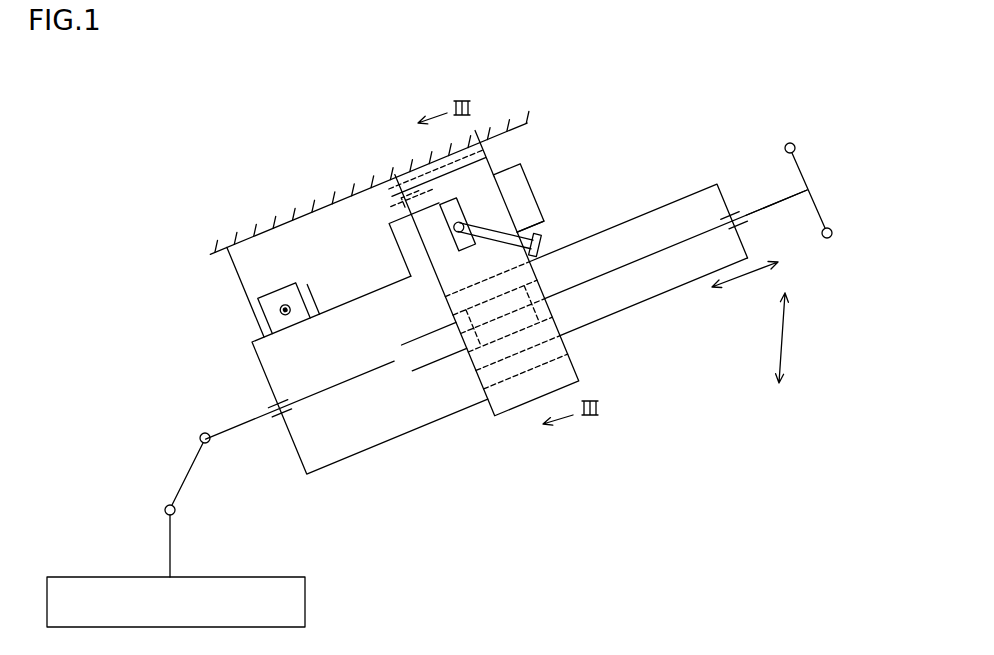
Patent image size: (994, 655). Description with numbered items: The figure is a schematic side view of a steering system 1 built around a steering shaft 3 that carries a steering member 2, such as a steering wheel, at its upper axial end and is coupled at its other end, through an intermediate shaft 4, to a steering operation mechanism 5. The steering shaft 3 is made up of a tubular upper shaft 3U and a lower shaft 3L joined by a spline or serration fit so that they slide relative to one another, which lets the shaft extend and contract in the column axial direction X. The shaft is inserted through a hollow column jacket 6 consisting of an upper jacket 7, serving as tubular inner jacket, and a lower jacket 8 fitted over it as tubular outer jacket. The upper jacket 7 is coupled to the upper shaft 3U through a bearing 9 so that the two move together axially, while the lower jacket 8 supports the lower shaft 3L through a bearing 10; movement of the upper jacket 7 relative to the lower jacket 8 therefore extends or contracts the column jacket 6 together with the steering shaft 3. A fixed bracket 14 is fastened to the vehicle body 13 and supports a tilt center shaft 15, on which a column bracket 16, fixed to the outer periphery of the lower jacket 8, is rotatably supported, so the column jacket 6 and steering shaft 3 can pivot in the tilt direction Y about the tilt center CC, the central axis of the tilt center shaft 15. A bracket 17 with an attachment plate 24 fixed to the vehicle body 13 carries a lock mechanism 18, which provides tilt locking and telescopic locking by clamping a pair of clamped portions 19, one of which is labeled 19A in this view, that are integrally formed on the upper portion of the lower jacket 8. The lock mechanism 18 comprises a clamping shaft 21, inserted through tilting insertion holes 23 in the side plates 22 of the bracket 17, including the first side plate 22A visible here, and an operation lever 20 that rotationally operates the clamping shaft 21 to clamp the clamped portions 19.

The steering system 1 is at (724, 123).
The steering member 2 is at (800, 165).
The steering shaft 3 is at (761, 196).
The upper shaft 3U is at (687, 240).
The lower shaft 3L is at (367, 372).
The intermediate shaft 4 is at (185, 473).
The steering operation mechanism 5 is at (305, 600).
The column jacket 6 is at (687, 295).
The upper jacket 7 is at (635, 307).
The lower jacket 8 is at (369, 448).
The bearing 9 is at (737, 213).
The bearing 10 is at (264, 405).
The vehicle body 13 is at (322, 207).
The fixed bracket 14 is at (282, 258).
The tilt center shaft 15 is at (258, 298).
The column bracket 16 is at (311, 304).
The bracket 17 is at (498, 157).
The lock mechanism 18 is at (531, 208).
The clamped portions 19 is at (565, 194).
The lock mechanism 19A is at (513, 190).
The operation lever 20 is at (533, 232).
The clamping shaft 21 is at (420, 245).
The side plates 22 is at (487, 304).
The first side plate 22A is at (505, 411).
The tilting insertion holes 23 is at (451, 249).
The attachment plate 24 is at (397, 202).
The tilt center CC is at (280, 310).
The column axial direction X is at (748, 278).
The tilt direction Y is at (788, 337).